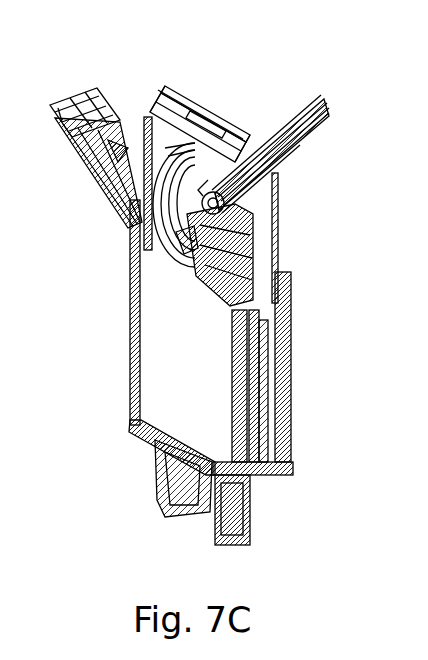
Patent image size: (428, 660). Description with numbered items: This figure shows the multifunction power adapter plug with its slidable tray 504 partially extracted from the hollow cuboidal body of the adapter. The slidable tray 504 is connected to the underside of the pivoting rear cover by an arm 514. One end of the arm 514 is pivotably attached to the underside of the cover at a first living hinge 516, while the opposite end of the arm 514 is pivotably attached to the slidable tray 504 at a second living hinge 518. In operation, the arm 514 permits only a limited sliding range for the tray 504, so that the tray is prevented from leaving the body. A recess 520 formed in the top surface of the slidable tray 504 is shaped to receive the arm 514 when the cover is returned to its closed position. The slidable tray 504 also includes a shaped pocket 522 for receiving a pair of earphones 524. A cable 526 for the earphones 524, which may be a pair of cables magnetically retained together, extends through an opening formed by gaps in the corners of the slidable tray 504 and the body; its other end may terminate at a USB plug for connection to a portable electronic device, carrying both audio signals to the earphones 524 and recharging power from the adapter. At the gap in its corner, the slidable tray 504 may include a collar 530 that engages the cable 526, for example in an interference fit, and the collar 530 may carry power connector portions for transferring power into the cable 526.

The slidable tray 504 is at (260, 250).
The arm 514 is at (125, 127).
The first living hinge 516 is at (108, 142).
The second living hinge 518 is at (167, 100).
The recess 520 is at (207, 126).
The shaped pocket 522 is at (177, 238).
The earphones 524 is at (217, 253).
The cable 526 is at (303, 147).
The collar 530 is at (243, 195).